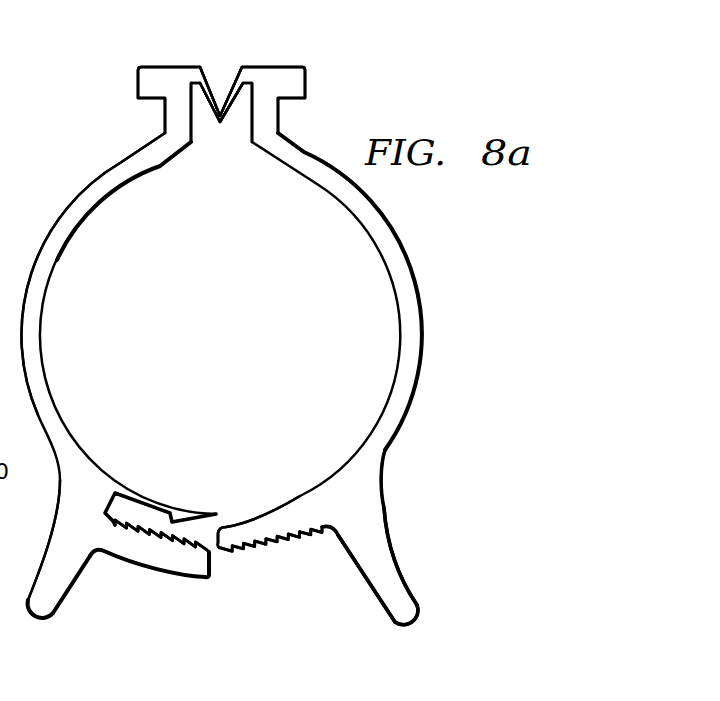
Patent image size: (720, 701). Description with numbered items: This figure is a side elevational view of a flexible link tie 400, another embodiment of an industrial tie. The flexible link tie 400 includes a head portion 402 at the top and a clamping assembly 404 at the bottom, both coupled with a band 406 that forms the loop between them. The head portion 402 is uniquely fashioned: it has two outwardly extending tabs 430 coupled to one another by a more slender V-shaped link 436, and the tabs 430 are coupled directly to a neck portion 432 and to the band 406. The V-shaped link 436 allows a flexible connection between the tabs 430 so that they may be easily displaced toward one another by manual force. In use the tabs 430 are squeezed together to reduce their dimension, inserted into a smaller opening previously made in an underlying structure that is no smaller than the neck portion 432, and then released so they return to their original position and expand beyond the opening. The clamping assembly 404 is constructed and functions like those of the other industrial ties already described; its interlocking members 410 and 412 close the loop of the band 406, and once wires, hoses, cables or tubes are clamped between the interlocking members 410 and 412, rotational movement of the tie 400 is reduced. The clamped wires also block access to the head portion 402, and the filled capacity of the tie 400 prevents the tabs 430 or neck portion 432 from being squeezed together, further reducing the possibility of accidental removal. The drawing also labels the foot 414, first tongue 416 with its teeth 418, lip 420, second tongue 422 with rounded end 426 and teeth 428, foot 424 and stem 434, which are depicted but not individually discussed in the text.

The flexible link tie 400 is at (487, 89).
The head portion 402 is at (384, 83).
The clamping assembly 404 is at (466, 537).
The band 406 is at (423, 317).
The interlocking member 410 is at (88, 630).
The interlocking member 412 is at (342, 640).
The first foot 414 is at (33, 619).
The first tongue 416 is at (203, 581).
The teeth of first tongue 418 is at (154, 555).
The lip 420 is at (213, 512).
The second tongue 422 is at (221, 557).
The second foot 424 is at (405, 615).
The rounded end of second tongue 426 is at (228, 526).
The teeth of second tongue 428 is at (289, 562).
The tab 430 is at (140, 77).
The neck portion 432 is at (133, 124).
The stem 434 is at (221, 164).
The V-shaped link 436 is at (216, 68).